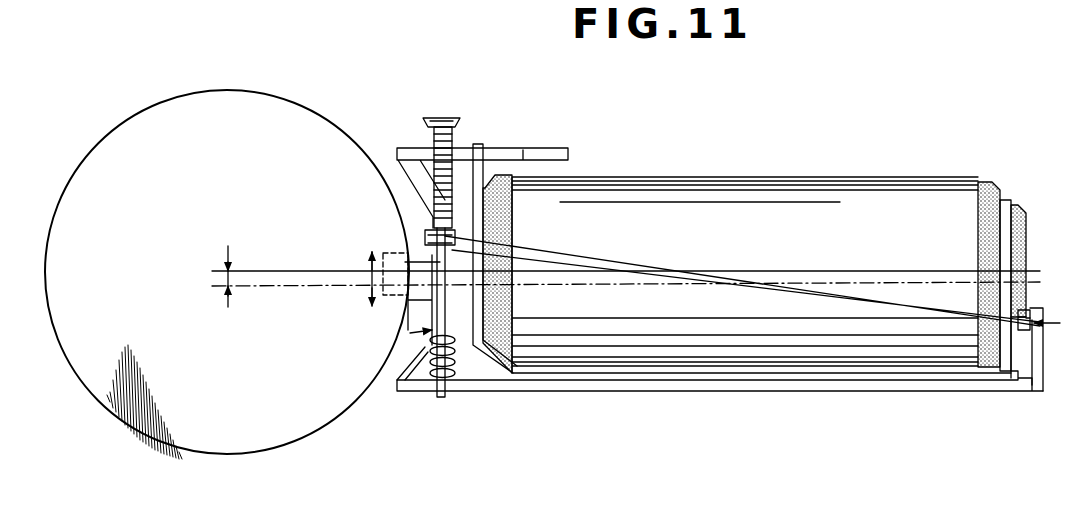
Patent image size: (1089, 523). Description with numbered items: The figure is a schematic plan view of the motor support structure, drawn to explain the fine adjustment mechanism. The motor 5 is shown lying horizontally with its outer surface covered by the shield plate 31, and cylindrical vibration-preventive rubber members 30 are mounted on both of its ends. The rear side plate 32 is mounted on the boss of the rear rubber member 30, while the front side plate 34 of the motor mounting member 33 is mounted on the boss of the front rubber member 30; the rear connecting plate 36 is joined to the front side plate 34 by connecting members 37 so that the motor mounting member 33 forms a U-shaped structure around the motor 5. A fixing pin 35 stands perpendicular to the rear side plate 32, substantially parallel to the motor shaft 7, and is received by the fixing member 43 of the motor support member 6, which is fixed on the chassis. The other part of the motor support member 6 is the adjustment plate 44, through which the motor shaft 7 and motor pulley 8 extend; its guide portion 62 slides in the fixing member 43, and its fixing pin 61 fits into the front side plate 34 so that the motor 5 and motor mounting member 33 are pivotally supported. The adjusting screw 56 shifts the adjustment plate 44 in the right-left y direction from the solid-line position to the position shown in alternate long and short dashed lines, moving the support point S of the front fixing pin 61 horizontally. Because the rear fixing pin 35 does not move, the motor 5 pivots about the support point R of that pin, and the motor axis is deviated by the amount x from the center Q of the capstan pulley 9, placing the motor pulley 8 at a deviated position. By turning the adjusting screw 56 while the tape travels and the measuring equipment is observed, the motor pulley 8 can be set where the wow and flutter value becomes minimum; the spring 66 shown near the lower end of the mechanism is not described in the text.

The capstan pulley 9 is at (253, 115).
The center of the capstan pulley Q is at (222, 270).
The axis deviation x is at (222, 280).
The y-direction y is at (370, 268).
The support point of the front side fixing pin S is at (428, 232).
The motor pulley 8 is at (390, 296).
The motor shaft 7 is at (406, 302).
The adjustment plate 44 is at (412, 333).
The adjusting screw 56 is at (447, 118).
The fixing pin 61 is at (497, 214).
The front side plate 34 is at (478, 314).
The guide portion 62 is at (441, 399).
The spring 66 is at (435, 350).
The shield plate 31 is at (790, 190).
The vibration-preventive rubber member 30 is at (497, 336).
The rear side plate 32 is at (1018, 216).
The rear connecting plate 36 is at (1022, 306).
The fixing pin 35 is at (1040, 326).
The support point of the rear side fixing pin R is at (1036, 335).
The fixing member 43 is at (784, 393).
The motor support member 6 is at (679, 396).
The motor mounting member 33 is at (576, 382).
The connecting member 37 is at (654, 388).
The motor 5 is at (880, 168).